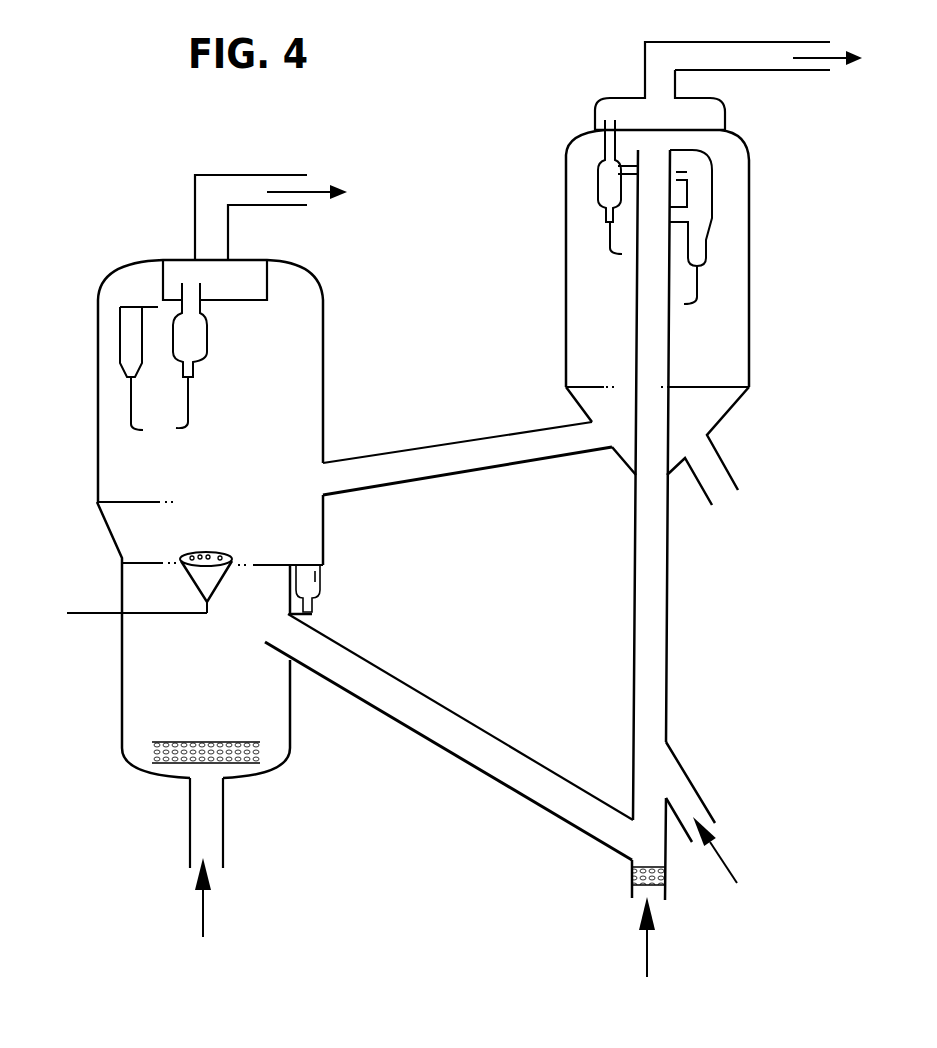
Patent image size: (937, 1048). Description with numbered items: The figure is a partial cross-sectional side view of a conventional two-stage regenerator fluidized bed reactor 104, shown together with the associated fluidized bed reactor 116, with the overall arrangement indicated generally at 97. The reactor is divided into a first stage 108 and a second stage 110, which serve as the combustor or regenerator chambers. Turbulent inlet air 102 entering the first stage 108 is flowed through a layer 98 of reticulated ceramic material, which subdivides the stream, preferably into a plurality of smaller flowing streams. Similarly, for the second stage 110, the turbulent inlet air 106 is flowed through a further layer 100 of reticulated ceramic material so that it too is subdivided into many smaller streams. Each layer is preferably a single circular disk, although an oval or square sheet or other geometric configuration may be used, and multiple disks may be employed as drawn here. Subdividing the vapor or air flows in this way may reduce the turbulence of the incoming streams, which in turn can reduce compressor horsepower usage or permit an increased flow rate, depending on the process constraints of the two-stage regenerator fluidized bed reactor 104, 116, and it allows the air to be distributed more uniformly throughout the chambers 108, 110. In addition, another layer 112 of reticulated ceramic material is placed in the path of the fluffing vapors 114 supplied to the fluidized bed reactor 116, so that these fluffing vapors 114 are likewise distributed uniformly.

The reactor system 97 is at (436, 150).
The layer of reticulated ceramic material 98 is at (167, 762).
The layer of reticulated ceramic material 100 is at (174, 548).
The turbulent inlet air 102 is at (203, 912).
The two-stage regenerator fluidized bed reactor 104 is at (88, 423).
The turbulent inlet air 106 is at (112, 616).
The first stage 108 is at (186, 697).
The second stage 110 is at (300, 378).
The layer of reticulated ceramic material 112 is at (632, 875).
The fluffing vapors 114 is at (647, 958).
The fluidized bed reactor 116 is at (762, 320).